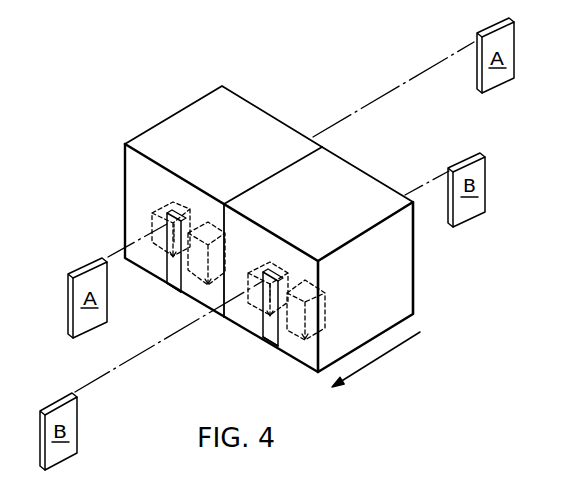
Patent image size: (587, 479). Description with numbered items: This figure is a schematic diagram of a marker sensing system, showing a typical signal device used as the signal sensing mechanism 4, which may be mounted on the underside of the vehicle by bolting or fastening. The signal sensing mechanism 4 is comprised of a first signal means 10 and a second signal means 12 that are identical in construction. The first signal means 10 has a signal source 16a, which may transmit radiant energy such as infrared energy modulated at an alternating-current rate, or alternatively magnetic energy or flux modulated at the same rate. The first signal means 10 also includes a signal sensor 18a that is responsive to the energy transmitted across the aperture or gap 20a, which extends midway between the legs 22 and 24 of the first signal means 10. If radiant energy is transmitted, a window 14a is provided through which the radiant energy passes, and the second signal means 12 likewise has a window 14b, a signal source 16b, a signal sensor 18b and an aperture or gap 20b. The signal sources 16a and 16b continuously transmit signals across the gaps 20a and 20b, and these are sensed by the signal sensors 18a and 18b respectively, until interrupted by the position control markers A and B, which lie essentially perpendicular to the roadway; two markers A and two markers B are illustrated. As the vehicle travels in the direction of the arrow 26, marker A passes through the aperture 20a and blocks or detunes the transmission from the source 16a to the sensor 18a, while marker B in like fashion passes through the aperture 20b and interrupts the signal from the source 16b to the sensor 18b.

The signal sensing mechanism 4 is at (350, 146).
The first signal means 10 is at (182, 115).
The second signal means 12 is at (382, 187).
The window 14a is at (166, 231).
The window 14b is at (261, 316).
The signal source 16a is at (178, 198).
The signal source 16b is at (286, 259).
The signal sensor 18a is at (186, 223).
The signal sensor 18b is at (328, 293).
The aperture or gap 20a is at (173, 282).
The aperture or gap 20b is at (268, 334).
The leg 22 is at (127, 233).
The leg 24 is at (203, 299).
The arrow 26 is at (387, 352).